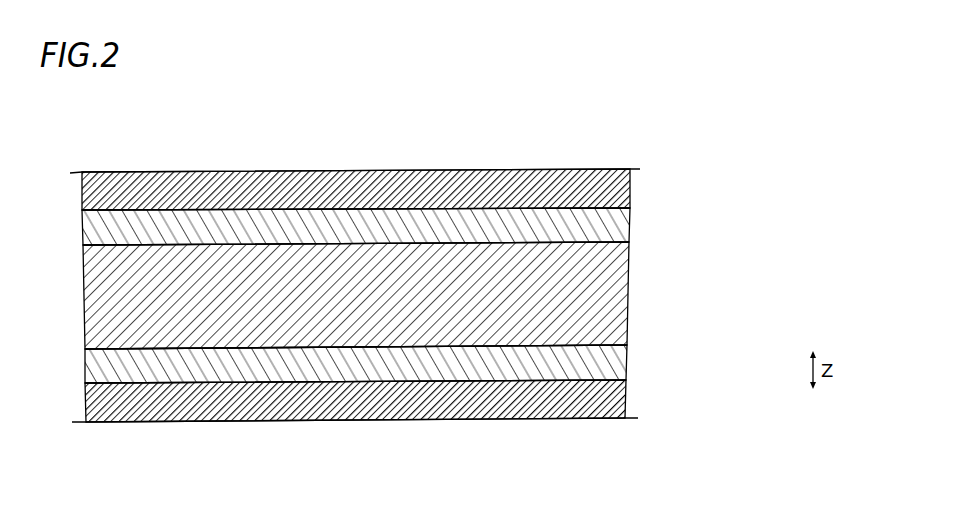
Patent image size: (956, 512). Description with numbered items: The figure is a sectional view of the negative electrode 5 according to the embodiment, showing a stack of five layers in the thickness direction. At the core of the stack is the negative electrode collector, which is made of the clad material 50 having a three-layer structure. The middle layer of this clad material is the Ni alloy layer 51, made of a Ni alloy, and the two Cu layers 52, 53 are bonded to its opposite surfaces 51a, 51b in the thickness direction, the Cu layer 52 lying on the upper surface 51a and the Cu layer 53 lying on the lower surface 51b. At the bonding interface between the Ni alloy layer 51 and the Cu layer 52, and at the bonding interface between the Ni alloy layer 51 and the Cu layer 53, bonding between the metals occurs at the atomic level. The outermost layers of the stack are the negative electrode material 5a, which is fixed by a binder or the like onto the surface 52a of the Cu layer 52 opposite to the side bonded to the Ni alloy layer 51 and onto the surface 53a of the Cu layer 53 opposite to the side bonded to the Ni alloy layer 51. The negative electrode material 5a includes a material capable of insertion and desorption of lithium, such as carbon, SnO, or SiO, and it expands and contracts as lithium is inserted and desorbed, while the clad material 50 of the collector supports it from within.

The negative electrode 5 is at (651, 153).
The negative electrode material 5a is at (630, 182).
The clad material 50 is at (435, 295).
The Cu layer 52 is at (630, 227).
The Ni alloy layer 51 is at (630, 298).
The Cu layer 53 is at (397, 364).
The surface of the Ni alloy layer 51a is at (413, 244).
The surface of the Cu layer 52a is at (535, 208).
The surface of the Ni alloy layer 51b is at (415, 350).
The surface of the Cu layer 53a is at (535, 383).